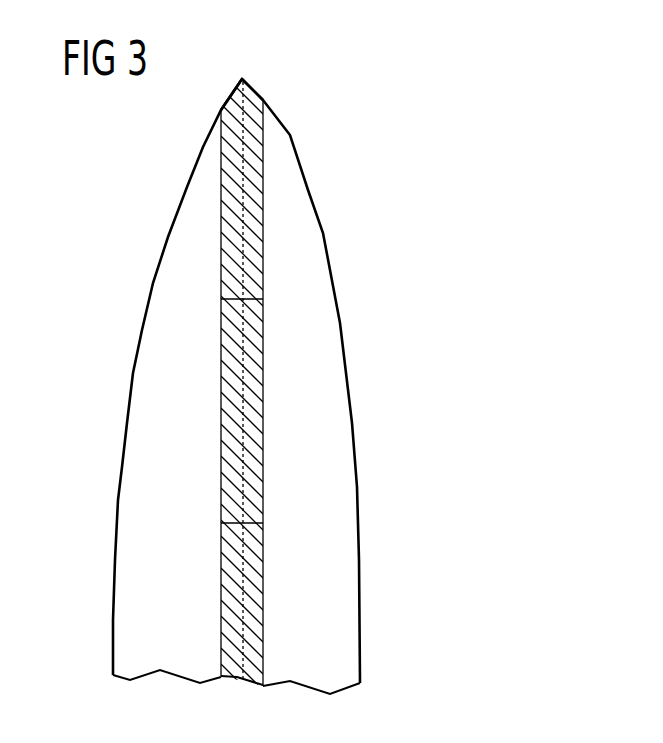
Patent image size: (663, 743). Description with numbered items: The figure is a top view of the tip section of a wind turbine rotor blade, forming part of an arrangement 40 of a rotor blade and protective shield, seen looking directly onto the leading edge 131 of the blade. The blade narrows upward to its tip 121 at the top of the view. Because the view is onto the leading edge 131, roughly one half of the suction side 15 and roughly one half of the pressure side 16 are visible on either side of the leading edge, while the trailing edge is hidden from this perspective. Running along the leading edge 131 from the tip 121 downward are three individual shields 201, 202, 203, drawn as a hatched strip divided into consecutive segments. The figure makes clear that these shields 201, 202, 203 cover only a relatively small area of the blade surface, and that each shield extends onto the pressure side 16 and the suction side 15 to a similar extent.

The arrangement 40 is at (269, 386).
The suction side 15 is at (348, 527).
The pressure side 16 is at (127, 498).
The tip 121 is at (242, 78).
The leading edge 131 is at (240, 391).
The shield 201 is at (258, 221).
The shield 202 is at (255, 435).
The shield 203 is at (264, 606).